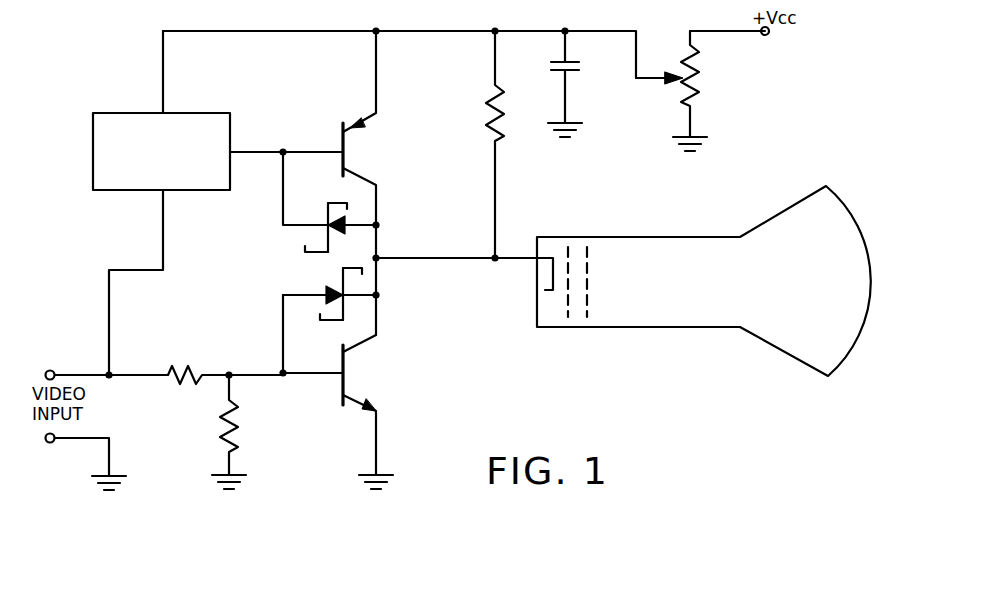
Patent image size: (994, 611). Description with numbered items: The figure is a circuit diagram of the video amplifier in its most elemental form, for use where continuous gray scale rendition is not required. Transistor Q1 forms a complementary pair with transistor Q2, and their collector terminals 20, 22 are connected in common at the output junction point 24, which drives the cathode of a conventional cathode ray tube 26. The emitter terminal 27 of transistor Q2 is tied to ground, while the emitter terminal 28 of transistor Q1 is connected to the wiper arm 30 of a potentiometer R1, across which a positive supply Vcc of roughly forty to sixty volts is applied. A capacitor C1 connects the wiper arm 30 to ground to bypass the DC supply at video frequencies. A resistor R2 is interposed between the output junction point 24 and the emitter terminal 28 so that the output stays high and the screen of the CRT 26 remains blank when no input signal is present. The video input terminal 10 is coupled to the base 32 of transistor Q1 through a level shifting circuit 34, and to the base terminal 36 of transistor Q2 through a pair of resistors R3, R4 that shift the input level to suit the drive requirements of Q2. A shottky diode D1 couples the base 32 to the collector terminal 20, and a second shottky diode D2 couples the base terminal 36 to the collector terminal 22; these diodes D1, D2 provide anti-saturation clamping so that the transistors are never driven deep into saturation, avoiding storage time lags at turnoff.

The video input terminal 10 is at (54, 371).
The collector terminal 20 is at (376, 190).
The collector terminal 22 is at (368, 344).
The output junction point 24 is at (378, 257).
The cathode ray tube 26 is at (828, 358).
The emitter terminal 27 is at (376, 452).
The emitter terminal 28 is at (376, 65).
The wiper arm 30 is at (653, 75).
The base 32 is at (340, 137).
The level shifting circuit 34 is at (134, 112).
The base terminal 36 is at (340, 392).
The transistor Q1 is at (366, 183).
The transistor Q2 is at (338, 405).
The shottky diode D1 is at (318, 246).
The shottky diode D2 is at (338, 287).
The potentiometer R1 is at (704, 92).
The resistor R2 is at (500, 136).
The resistor R3 is at (223, 363).
The resistor R4 is at (230, 405).
The capacitor C1 is at (588, 53).